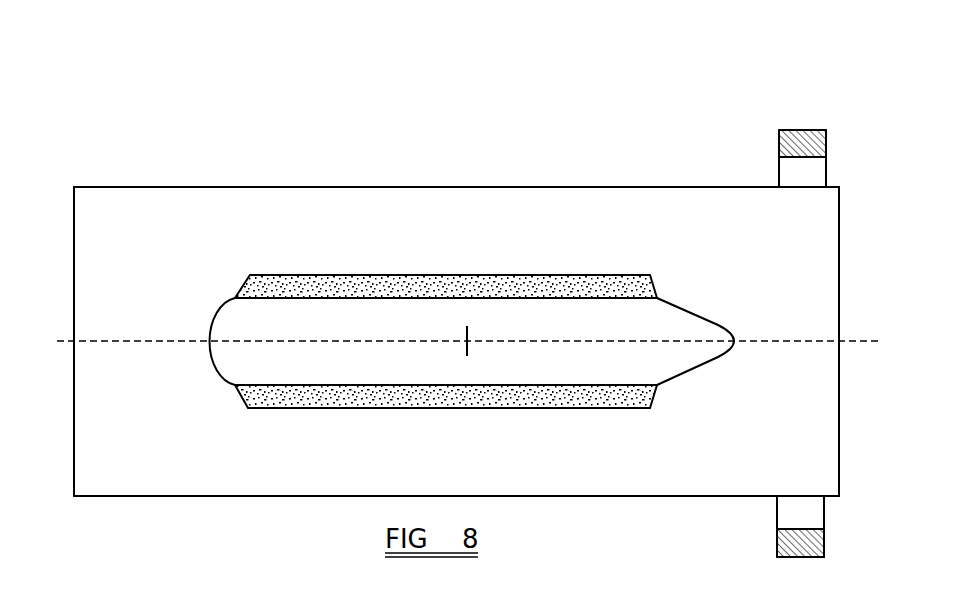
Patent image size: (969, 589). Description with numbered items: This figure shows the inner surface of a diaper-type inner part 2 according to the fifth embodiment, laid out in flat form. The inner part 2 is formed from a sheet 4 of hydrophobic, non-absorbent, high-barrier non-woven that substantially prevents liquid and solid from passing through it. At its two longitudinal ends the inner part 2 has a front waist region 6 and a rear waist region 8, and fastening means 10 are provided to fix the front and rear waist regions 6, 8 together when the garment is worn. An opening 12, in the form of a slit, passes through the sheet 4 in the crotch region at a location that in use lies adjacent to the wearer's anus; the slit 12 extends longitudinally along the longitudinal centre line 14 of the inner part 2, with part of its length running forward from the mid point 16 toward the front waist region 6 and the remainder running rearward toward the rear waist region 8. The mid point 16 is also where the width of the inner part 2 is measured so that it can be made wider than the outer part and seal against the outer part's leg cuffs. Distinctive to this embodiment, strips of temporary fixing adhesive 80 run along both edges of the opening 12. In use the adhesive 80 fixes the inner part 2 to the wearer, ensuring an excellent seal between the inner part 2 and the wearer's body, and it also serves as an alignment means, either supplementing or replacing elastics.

The inner part 2 is at (276, 128).
The sheet 4 is at (461, 200).
The front waist region 6 is at (102, 293).
The rear waist region 8 is at (793, 293).
The fastening means 10 is at (818, 130).
The opening 12 is at (604, 313).
The longitudinal centre line 14 is at (780, 342).
The mid point 16 is at (470, 343).
The temporary fixing adhesive 80 is at (373, 288).